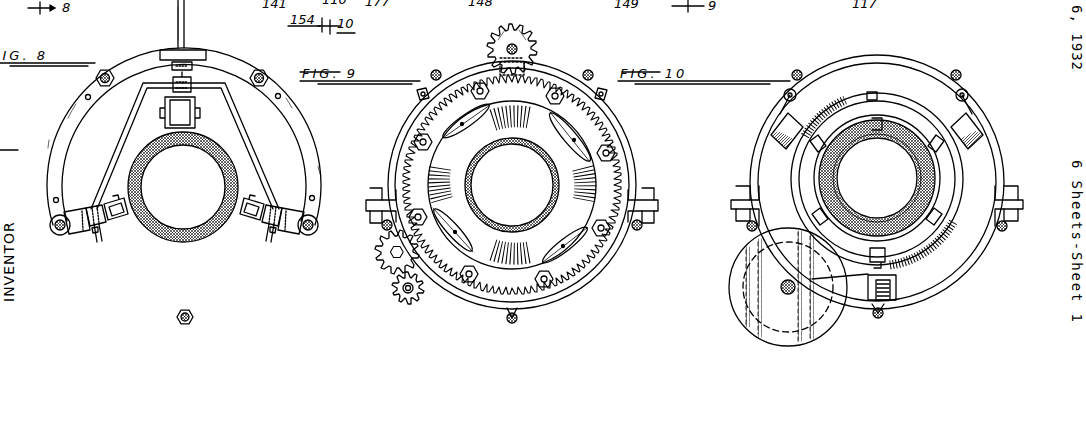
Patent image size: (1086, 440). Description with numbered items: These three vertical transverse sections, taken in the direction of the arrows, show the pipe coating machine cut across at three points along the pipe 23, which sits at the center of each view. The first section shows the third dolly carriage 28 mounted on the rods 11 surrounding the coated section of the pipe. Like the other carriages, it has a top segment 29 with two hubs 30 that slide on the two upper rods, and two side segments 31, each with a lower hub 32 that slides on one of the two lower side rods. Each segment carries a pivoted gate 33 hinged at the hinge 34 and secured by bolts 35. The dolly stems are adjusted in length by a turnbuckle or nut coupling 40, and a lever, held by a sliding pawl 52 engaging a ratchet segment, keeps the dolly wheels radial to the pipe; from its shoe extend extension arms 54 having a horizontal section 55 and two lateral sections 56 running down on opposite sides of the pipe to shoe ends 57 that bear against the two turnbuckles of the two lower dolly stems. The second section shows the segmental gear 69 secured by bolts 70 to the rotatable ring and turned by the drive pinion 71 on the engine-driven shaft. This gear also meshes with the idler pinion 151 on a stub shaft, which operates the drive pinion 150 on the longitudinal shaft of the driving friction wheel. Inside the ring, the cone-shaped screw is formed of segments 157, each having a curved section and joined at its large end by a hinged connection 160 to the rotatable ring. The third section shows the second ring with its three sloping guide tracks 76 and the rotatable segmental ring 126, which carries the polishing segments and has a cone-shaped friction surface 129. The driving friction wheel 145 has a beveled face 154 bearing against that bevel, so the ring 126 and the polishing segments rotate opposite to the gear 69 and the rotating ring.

In FIG. 8, the rods 11 is at (178, 317).
In FIG. 9, the rods 11 is at (511, 323).
In FIG. 8, the pipe 23 is at (224, 173).
In FIG. 9, the pipe 23 is at (538, 150).
In FIG. 10, the pipe 23 is at (918, 177).
In FIG. 8, the third dolly carriage 28 is at (196, 48).
In FIG. 8, the top segment 29 is at (228, 58).
In FIG. 8, the hubs 30 is at (107, 90).
In FIG. 8, the side segments 31 is at (52, 147).
In FIG. 8, the lower hub 32 is at (314, 234).
In FIG. 8, the pivoted gate 33 is at (70, 118).
In FIG. 8, the hinge 34 is at (85, 95).
In FIG. 8, the bolts 35 is at (316, 197).
In FIG. 8, the turnbuckle or nut coupling 40 is at (92, 212).
In FIG. 8, the sliding pawl 52 is at (58, 236).
In FIG. 8, the extension arms 54 is at (262, 160).
In FIG. 8, the horizontal section 55 is at (166, 82).
In FIG. 8, the lateral sections 56 is at (114, 160).
In FIG. 8, the shoe ends 57 is at (98, 232).
In FIG. 9, the segmental gear 69 is at (612, 178).
In FIG. 9, the bolts 70 is at (465, 280).
In FIG. 9, the drive pinion 71 is at (534, 52).
In FIG. 10, the sloping guide tracks 76 is at (897, 300).
In FIG. 10, the rotatable segmental ring 126 is at (975, 163).
In FIG. 10, the cone-shaped friction surface 129 is at (962, 186).
In FIG. 10, the driving friction wheel 145 is at (762, 312).
In FIG. 9, the drive pinion 150 is at (402, 303).
In FIG. 9, the idler pinion 151 is at (386, 258).
In FIG. 10, the beveled face 154 is at (900, 276).
In FIG. 9, the segments 157 is at (478, 226).
In FIG. 9, the hinged connection 160 is at (576, 150).